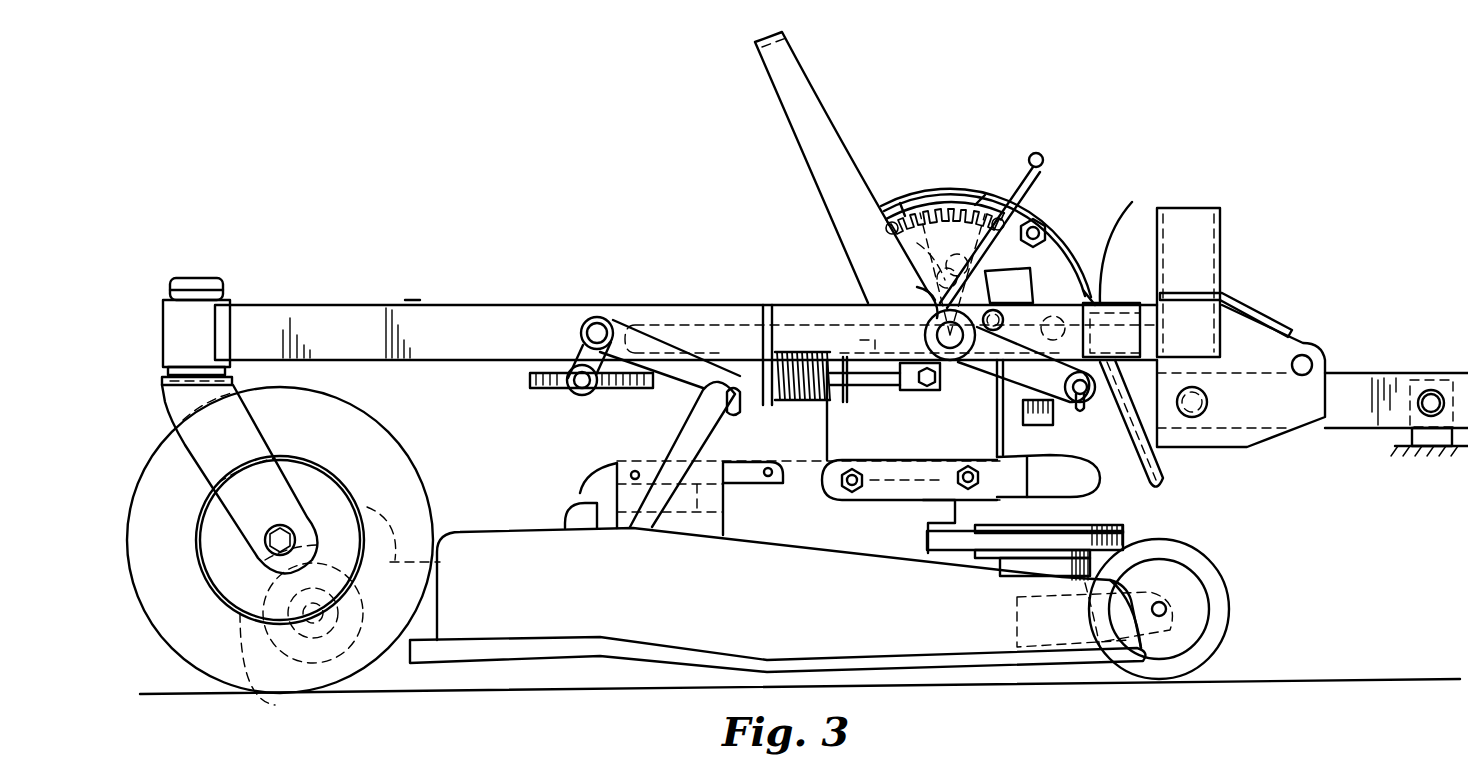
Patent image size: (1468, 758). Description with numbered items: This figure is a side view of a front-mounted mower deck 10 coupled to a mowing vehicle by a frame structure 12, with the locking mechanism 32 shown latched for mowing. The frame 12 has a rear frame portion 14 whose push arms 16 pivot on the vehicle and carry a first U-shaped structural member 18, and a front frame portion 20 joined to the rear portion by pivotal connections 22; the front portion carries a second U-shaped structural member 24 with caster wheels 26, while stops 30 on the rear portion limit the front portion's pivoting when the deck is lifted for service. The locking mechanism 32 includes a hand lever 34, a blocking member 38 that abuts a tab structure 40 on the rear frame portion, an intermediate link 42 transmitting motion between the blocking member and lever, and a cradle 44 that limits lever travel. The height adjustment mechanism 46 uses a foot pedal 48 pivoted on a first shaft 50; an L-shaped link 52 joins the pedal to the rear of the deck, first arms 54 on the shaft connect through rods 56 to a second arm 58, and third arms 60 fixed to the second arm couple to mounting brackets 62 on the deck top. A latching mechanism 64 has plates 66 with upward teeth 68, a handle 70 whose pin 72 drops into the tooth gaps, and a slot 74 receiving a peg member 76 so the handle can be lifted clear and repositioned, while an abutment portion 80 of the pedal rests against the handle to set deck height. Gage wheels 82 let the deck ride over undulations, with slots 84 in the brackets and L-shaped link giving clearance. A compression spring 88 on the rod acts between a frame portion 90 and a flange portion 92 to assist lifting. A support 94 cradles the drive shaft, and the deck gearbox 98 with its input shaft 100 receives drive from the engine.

The mower deck 10 is at (718, 612).
The frame structure 12 is at (410, 298).
The rear frame portion 14 is at (1284, 326).
The push arms 16 is at (1345, 378).
The first U-shaped structural member 18 is at (1222, 240).
The front frame portion 20 is at (340, 335).
The pivotal connections 22 is at (905, 318).
The second U-shaped structural member 24 is at (1115, 318).
The caster wheels 26 is at (372, 425).
The stops 30 is at (1032, 268).
The locking mechanism 32 is at (950, 388).
The lever 34 is at (660, 320).
The blocking member 38 is at (1130, 241).
The tab structure 40 is at (1205, 288).
The intermediate link 42 is at (978, 380).
The cradle 44 is at (860, 340).
The height adjustment mechanism 46 is at (1013, 102).
The foot pedal 48 is at (795, 40).
The first shaft 50 is at (917, 287).
The L-shaped link 52 is at (1080, 490).
The first arms 54 is at (1000, 420).
The rods 56 is at (872, 386).
The second arm 58 is at (570, 348).
The third arms 60 is at (680, 385).
The mounting brackets 62 is at (690, 440).
The latching mechanism 64 is at (960, 160).
The plates 66 is at (917, 243).
The teeth 68 is at (926, 210).
The handle 70 is at (1040, 153).
The pin 72 is at (1020, 195).
The slot 74 is at (1046, 229).
The peg member 76 is at (902, 203).
The abutment portion 80 is at (978, 205).
The gage wheels 82 is at (262, 692).
The slots 84 is at (738, 415).
The spring 88 is at (800, 402).
The portion of the front frame 90 is at (762, 340).
The flange portion 92 is at (845, 404).
The support 94 is at (1168, 486).
The deck gearbox 98 is at (920, 460).
The input shaft 100 is at (1053, 477).